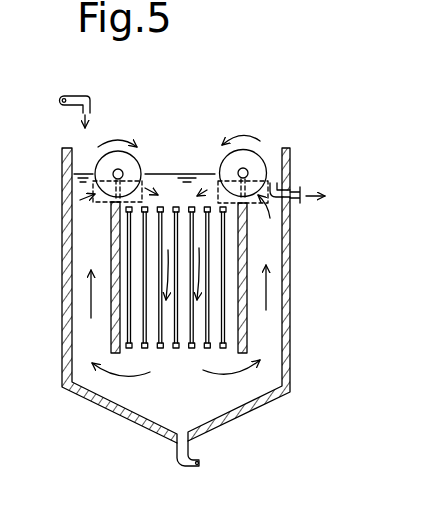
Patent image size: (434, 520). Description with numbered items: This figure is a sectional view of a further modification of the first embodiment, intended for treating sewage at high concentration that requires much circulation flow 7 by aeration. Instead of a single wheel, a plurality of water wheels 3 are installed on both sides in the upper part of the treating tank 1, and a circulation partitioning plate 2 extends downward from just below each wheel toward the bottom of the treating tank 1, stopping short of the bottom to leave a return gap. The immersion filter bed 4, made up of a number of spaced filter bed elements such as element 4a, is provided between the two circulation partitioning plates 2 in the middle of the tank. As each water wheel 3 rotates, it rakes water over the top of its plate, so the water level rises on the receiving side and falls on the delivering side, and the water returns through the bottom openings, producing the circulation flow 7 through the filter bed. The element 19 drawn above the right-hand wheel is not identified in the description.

The treating tank 1 is at (113, 412).
The circulation partitioning plate 2 is at (112, 245).
The water wheel 3 is at (146, 158).
The scraping roller 19 is at (242, 138).
The immersion filter bed 4 is at (142, 317).
The filter bed element 4a is at (225, 323).
The circulation flow 7 is at (240, 375).